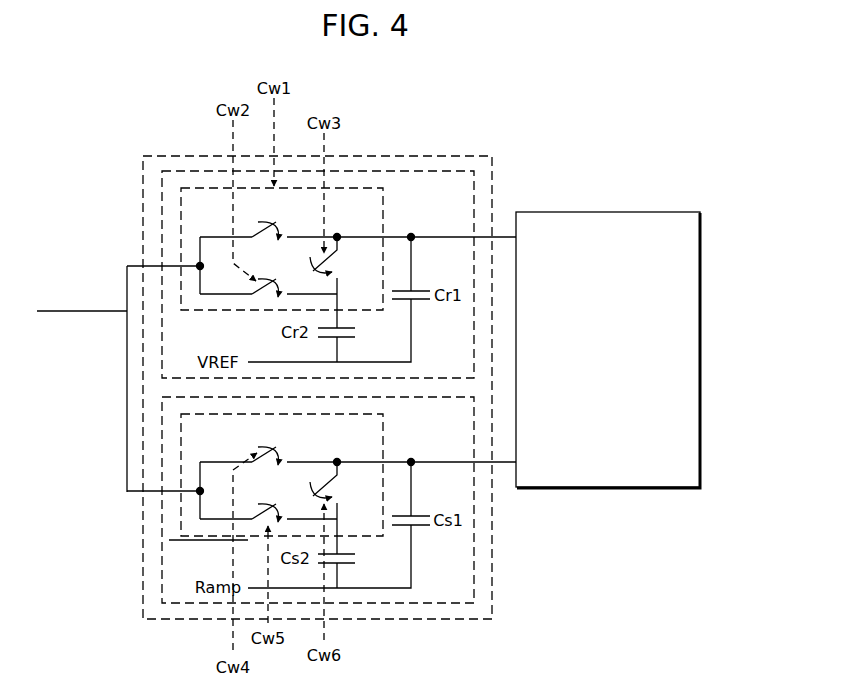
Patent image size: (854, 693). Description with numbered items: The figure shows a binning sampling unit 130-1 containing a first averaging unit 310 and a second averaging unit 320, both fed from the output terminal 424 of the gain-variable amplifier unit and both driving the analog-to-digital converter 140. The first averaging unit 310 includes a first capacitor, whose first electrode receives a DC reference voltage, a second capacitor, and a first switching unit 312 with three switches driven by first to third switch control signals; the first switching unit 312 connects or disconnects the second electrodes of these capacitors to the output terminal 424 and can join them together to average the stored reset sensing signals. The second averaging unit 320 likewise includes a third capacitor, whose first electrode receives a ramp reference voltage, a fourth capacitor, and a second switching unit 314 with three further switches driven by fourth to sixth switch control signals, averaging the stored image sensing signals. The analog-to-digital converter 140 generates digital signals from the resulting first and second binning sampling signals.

The binning sampling unit 130-1 is at (360, 155).
The first averaging unit 310 is at (412, 170).
The first switching unit 312 is at (383, 195).
The second switching unit 314 is at (383, 422).
The second averaging unit 320 is at (433, 603).
The analog-to-digital converter 140 is at (597, 211).
The output terminal 424 is at (80, 310).